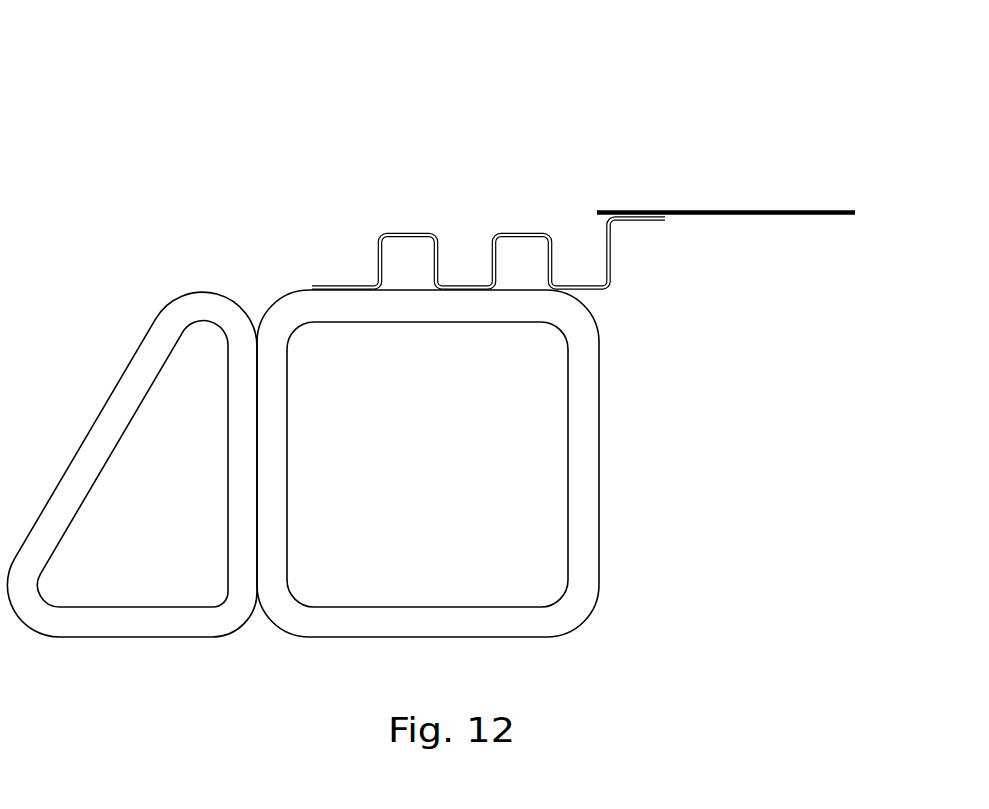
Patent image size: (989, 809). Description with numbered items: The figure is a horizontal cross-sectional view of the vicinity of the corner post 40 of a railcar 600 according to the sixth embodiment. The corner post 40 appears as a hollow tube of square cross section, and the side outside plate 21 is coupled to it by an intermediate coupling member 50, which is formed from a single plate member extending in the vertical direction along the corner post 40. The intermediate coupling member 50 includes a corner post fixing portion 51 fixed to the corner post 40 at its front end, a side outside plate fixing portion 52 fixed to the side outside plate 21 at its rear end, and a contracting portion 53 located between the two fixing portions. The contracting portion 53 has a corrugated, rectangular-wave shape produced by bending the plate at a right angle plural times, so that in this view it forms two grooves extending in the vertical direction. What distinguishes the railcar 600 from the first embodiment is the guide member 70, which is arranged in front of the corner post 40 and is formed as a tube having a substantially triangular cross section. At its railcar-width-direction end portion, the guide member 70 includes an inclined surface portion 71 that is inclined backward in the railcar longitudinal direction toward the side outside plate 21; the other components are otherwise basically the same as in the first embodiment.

The railcar 600 is at (655, 138).
The side outside plate 21 is at (742, 210).
The corner post 40 is at (585, 432).
The intermediate coupling member 50 is at (502, 210).
The corner post fixing portion 51 is at (502, 230).
The side outside plate fixing portion 52 is at (642, 220).
The contracting portion 53 is at (507, 230).
The guide member 70 is at (132, 403).
The inclined surface portion 71 is at (135, 383).